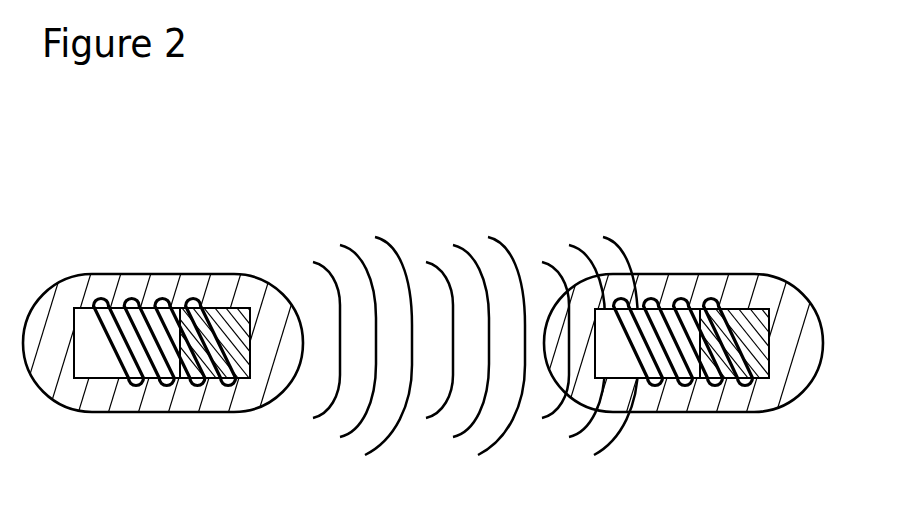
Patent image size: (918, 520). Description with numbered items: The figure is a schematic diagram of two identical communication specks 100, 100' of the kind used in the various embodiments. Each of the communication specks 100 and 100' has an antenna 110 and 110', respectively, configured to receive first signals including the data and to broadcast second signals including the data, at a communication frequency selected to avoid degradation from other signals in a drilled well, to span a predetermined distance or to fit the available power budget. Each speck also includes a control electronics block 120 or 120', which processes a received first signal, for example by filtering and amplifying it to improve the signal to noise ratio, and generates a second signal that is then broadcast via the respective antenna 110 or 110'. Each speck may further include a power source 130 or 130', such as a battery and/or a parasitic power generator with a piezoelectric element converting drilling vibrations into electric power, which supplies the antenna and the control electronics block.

The communication speck 100 is at (152, 321).
The antenna 110 is at (154, 391).
The control electronics block 120 is at (228, 381).
The power source 130 is at (141, 308).
The communication speck 100' is at (662, 312).
The antenna 110' is at (683, 379).
The control electronics block 120' is at (768, 354).
The power source 130' is at (682, 290).